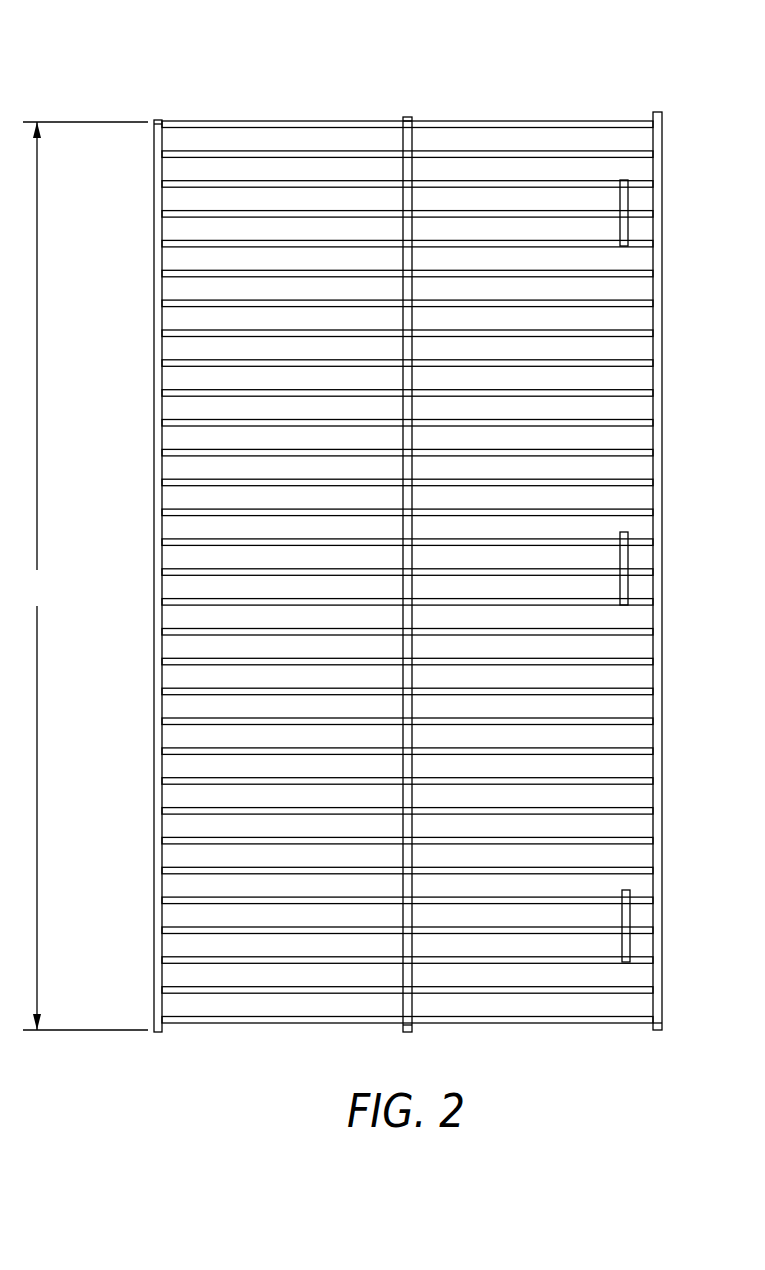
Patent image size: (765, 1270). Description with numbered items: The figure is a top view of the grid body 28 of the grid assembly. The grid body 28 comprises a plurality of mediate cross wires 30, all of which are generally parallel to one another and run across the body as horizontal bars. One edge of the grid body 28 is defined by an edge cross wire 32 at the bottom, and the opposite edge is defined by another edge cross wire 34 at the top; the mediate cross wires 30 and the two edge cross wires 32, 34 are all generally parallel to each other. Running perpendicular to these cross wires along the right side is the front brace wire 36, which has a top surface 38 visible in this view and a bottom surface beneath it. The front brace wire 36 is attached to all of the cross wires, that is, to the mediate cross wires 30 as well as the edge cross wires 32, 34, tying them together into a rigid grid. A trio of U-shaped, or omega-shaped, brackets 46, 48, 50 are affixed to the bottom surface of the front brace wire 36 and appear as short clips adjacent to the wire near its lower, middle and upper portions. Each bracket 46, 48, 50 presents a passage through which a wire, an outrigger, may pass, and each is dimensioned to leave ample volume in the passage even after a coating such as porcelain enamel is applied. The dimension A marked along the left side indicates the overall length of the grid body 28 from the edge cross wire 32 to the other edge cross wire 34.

The grid body 28 is at (608, 80).
The mediate cross wires 30 is at (185, 340).
The edge cross wire 32 is at (250, 1032).
The other edge cross wire 34 is at (245, 122).
The front brace wire 36 is at (660, 164).
The top surface 38 is at (660, 229).
The bracket 46 is at (630, 941).
The bracket 48 is at (628, 552).
The bracket 50 is at (627, 197).
The grate length dimension A is at (85, 576).